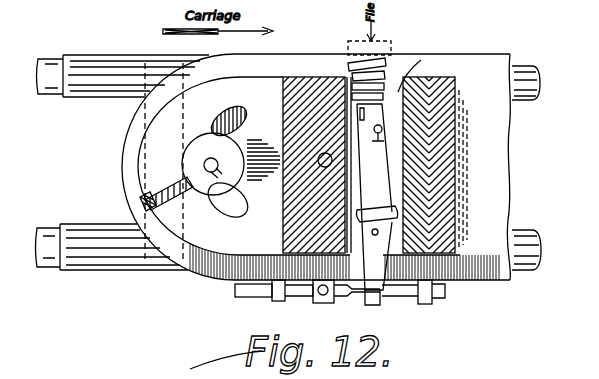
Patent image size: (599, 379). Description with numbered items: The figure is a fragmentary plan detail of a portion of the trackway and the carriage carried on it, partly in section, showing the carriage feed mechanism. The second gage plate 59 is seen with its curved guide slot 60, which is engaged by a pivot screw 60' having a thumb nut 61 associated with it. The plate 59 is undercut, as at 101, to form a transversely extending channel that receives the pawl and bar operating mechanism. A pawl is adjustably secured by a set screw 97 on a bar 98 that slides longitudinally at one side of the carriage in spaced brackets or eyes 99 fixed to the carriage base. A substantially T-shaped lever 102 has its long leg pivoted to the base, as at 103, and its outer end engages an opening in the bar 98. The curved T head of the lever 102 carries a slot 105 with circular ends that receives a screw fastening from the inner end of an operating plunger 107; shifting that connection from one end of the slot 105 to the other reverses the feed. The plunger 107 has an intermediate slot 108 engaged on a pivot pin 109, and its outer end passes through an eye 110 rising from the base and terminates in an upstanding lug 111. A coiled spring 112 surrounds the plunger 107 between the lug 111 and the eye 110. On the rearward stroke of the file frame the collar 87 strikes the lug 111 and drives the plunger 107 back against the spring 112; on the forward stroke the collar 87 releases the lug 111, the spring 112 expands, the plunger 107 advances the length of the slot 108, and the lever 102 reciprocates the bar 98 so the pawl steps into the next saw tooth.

The second gage plate 59 is at (158, 148).
The curved guide slot 60 is at (231, 158).
The pivot screw 60' is at (192, 147).
The thumb nut 61 is at (148, 193).
The collar 87 is at (393, 45).
The set screw 97 is at (321, 300).
The bar 98 is at (236, 290).
The brackets or eyes 99 is at (270, 298).
The undercut 101 is at (425, 62).
The T-shaped lever 102 is at (370, 252).
The pivot 103 is at (386, 230).
The slot 105 is at (380, 197).
The operating plunger 107 is at (400, 167).
The intermediate slot 108 is at (363, 142).
The pivot pin 109 is at (372, 129).
The eye 110 is at (360, 110).
The upstanding lug 111 is at (356, 80).
The coiled spring 112 is at (346, 84).